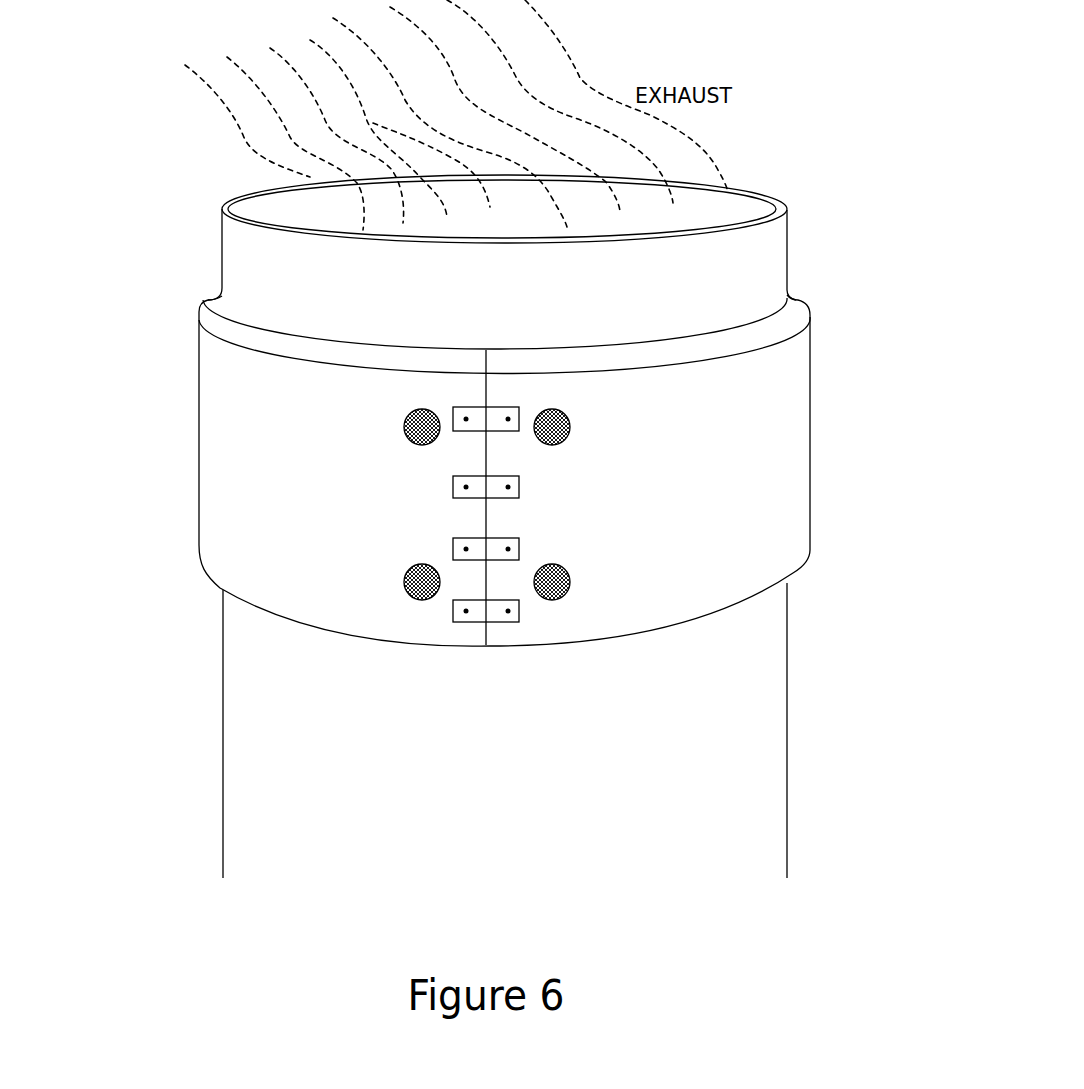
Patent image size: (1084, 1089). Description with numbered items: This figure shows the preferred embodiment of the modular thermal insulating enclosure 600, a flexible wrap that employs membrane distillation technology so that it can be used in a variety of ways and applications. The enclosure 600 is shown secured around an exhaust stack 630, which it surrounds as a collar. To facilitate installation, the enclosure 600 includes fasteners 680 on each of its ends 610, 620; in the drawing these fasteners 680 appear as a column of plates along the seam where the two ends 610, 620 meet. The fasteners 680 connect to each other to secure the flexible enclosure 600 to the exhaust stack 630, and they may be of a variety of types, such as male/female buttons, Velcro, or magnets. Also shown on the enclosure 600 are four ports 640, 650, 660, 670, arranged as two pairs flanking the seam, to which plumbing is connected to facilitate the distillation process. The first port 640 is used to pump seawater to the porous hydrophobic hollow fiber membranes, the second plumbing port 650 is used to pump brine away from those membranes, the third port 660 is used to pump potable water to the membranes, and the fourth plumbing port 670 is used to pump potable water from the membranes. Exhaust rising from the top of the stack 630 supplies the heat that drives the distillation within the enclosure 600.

The enclosure 600 is at (193, 428).
The end 610 is at (389, 654).
The end 620 is at (597, 656).
The exhaust stack 630 is at (800, 767).
The first port 640 is at (347, 580).
The second plumbing port 650 is at (584, 578).
The third port 660 is at (370, 428).
The fourth plumbing port 670 is at (592, 422).
The fasteners 680 is at (504, 434).